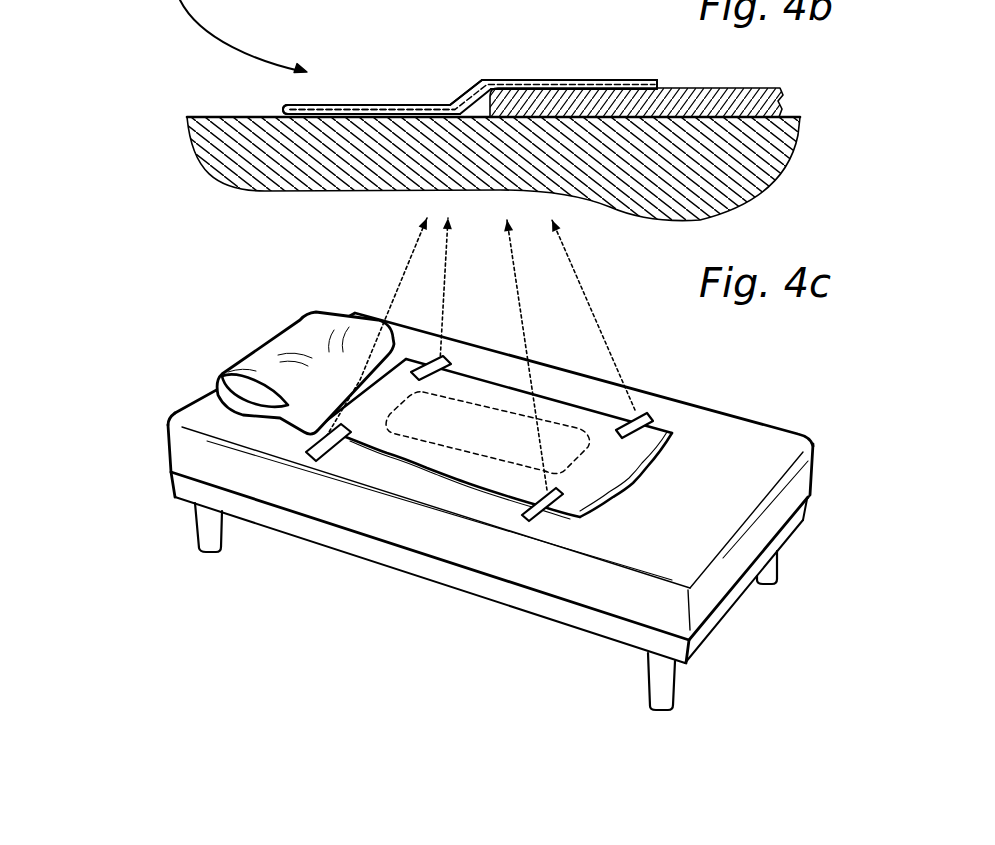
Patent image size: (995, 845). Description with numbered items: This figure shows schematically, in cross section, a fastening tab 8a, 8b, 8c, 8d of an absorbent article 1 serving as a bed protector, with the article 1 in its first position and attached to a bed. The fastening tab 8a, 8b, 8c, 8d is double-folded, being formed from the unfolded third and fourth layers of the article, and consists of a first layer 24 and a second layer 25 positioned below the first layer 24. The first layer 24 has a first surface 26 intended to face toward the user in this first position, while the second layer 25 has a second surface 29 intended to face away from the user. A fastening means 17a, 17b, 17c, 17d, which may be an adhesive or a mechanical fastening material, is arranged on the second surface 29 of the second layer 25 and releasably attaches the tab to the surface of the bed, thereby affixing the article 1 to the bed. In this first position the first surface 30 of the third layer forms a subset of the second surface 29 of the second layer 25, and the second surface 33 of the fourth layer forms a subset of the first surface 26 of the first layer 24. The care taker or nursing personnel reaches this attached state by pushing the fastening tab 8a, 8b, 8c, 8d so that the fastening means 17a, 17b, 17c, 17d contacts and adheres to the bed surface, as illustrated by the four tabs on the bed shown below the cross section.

The absorbent article 1 is at (806, 96).
The fastening tab 8a is at (318, 450).
The fastening tab 8b is at (444, 362).
The fastening tab 8c is at (525, 517).
The fastening tab 8d is at (646, 416).
The fastening means 17a is at (427, 129).
The fastening means 17b is at (427, 129).
The fastening means 17c is at (427, 129).
The fastening means 17d is at (332, 227).
The first layer 24 is at (657, 88).
The second layer 25 is at (657, 89).
The first surface 26 is at (348, 106).
The second surface 29 is at (290, 193).
The first surface of the third layer 30 is at (293, 115).
The second surface of the fourth layer 33 is at (300, 108).